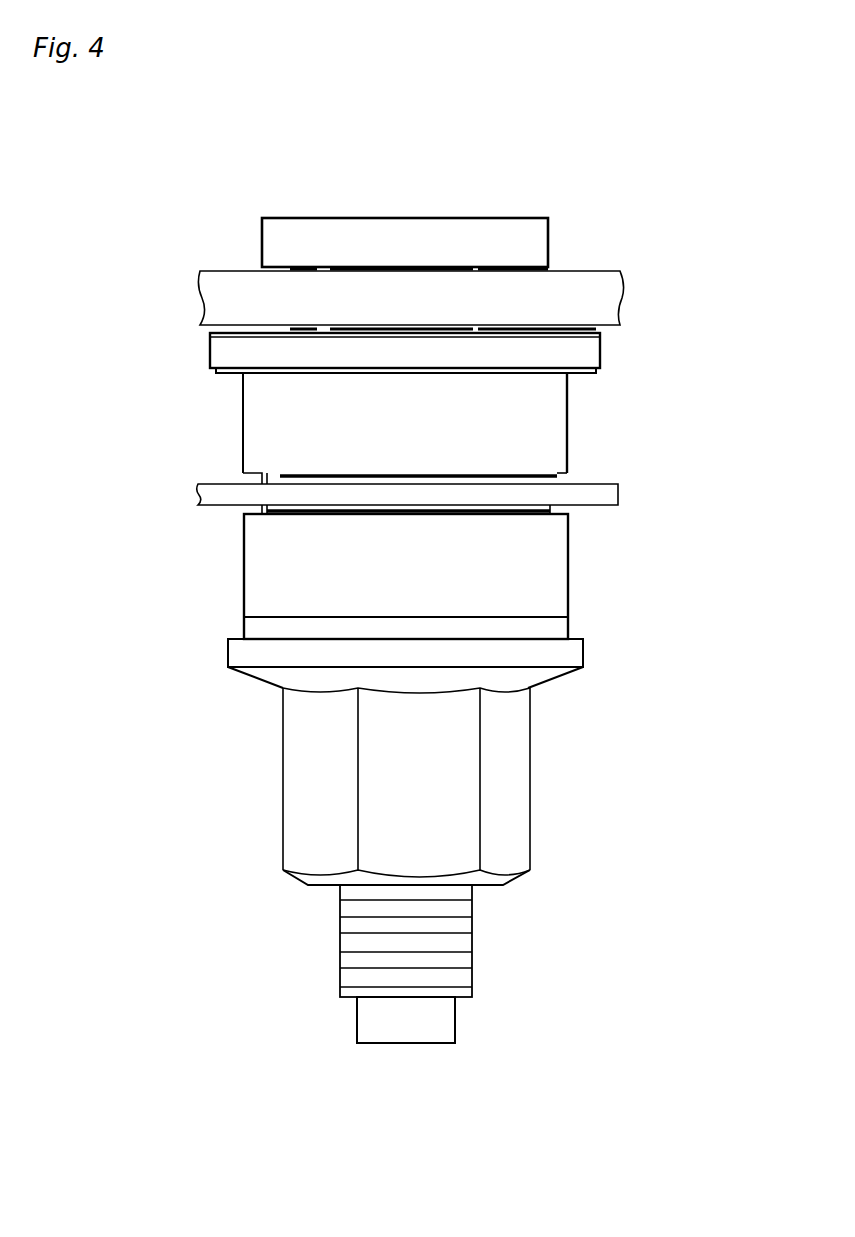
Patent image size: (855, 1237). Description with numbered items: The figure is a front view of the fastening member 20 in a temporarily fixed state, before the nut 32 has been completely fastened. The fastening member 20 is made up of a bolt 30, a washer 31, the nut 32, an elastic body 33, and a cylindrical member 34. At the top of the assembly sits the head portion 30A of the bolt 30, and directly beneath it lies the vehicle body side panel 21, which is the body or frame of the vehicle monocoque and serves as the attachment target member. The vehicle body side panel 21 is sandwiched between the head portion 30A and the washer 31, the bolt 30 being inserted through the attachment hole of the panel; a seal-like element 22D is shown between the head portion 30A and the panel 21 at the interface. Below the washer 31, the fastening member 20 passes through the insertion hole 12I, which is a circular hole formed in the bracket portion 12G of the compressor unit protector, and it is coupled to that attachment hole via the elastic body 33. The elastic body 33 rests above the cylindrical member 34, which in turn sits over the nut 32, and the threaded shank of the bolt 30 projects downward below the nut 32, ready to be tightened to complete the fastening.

The fastening member 20 is at (108, 180).
The head portion 30A is at (495, 245).
The gasket / seal 22D is at (298, 268).
The vehicle body side panel 21 is at (598, 297).
The washer 31 is at (587, 352).
The insertion hole 12I is at (570, 462).
The bracket portion 12G is at (572, 496).
The elastic body 33 is at (255, 582).
The cylindrical member 34 is at (568, 625).
The nut 32 is at (300, 745).
The bolt 30 is at (328, 930).